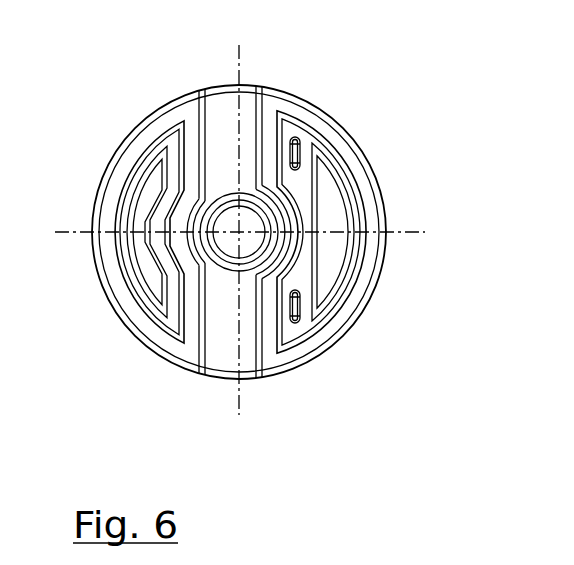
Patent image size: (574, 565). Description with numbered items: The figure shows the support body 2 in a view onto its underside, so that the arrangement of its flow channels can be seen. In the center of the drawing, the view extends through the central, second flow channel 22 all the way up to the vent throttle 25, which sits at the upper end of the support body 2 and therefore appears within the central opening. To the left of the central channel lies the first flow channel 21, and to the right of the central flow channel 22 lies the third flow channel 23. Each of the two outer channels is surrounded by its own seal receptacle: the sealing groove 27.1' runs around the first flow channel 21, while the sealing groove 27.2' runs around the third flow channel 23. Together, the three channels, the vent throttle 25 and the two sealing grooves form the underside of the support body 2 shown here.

The support body 2 is at (361, 95).
The first flow channel 21 is at (157, 243).
The second flow channel 22 is at (237, 238).
The third flow channel 23 is at (332, 247).
The vent throttle 25 is at (239, 233).
The sealing groove 27.1' is at (139, 188).
The sealing groove 27.2' is at (399, 232).